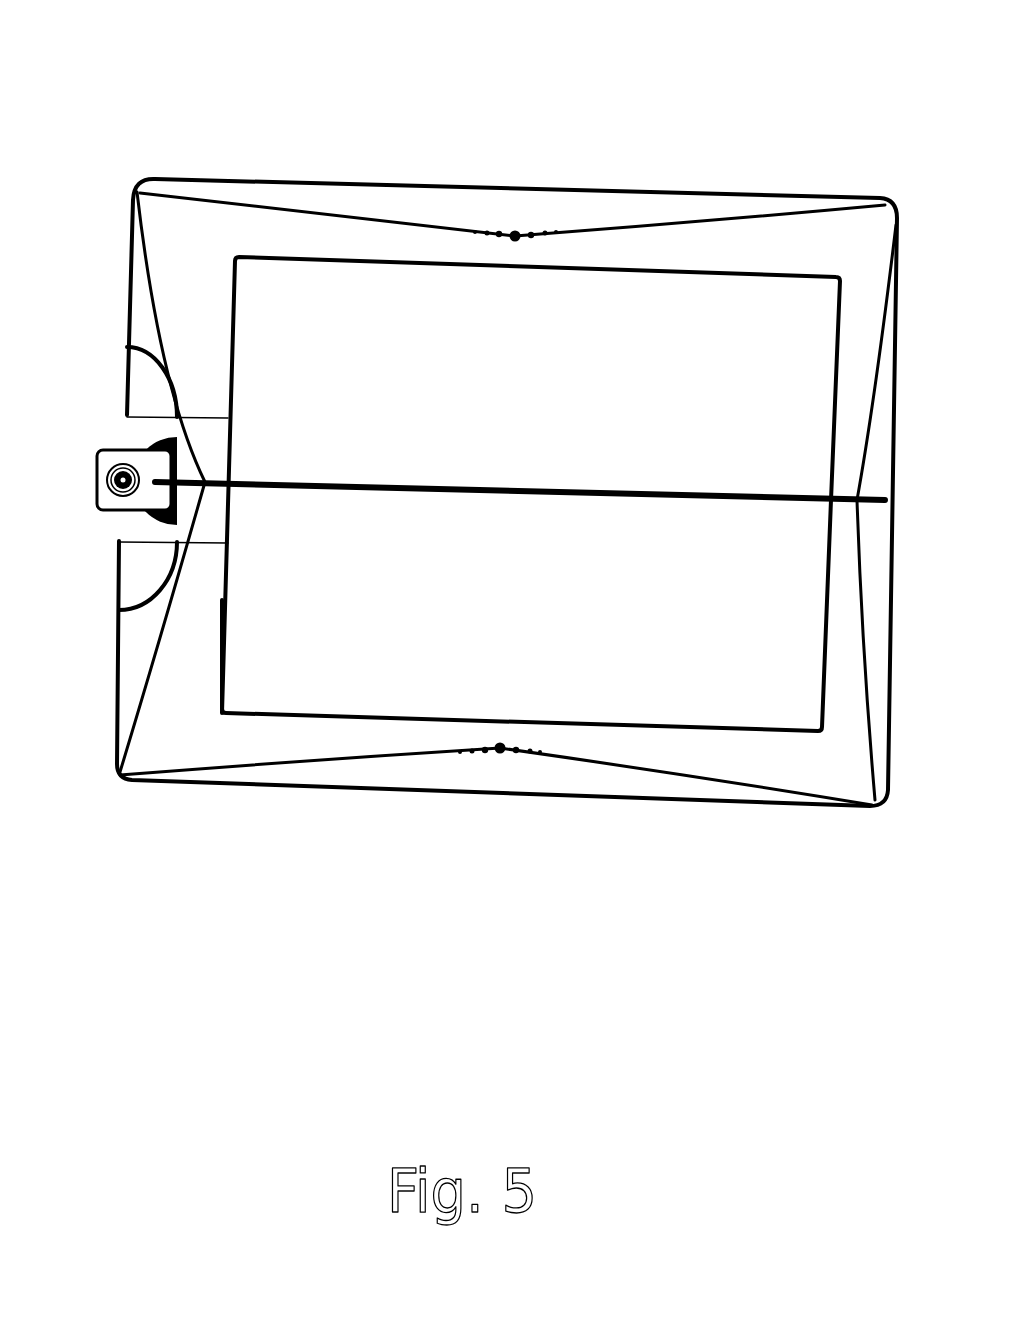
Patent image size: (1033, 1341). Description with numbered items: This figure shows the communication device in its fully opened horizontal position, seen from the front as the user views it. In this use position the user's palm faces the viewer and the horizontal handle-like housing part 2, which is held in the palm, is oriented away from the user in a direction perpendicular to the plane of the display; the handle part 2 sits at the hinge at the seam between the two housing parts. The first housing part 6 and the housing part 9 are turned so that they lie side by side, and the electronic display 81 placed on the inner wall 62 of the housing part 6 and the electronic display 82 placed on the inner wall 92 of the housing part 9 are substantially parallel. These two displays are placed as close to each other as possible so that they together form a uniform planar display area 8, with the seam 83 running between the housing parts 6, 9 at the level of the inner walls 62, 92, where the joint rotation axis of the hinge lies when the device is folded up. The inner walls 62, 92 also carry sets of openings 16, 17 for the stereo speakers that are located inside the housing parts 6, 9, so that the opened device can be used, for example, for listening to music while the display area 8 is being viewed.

The handle-like housing part 2 is at (124, 532).
The first housing part 6 is at (208, 156).
The planar electronic display 8 is at (531, 480).
The housing part 9 is at (104, 803).
The set of openings 16 is at (497, 752).
The set of openings 17 is at (515, 232).
The inner wall 62 is at (288, 218).
The electronic display 81 is at (735, 290).
The electronic display 82 is at (668, 697).
The seam 83 is at (735, 492).
The inner wall 92 is at (222, 745).